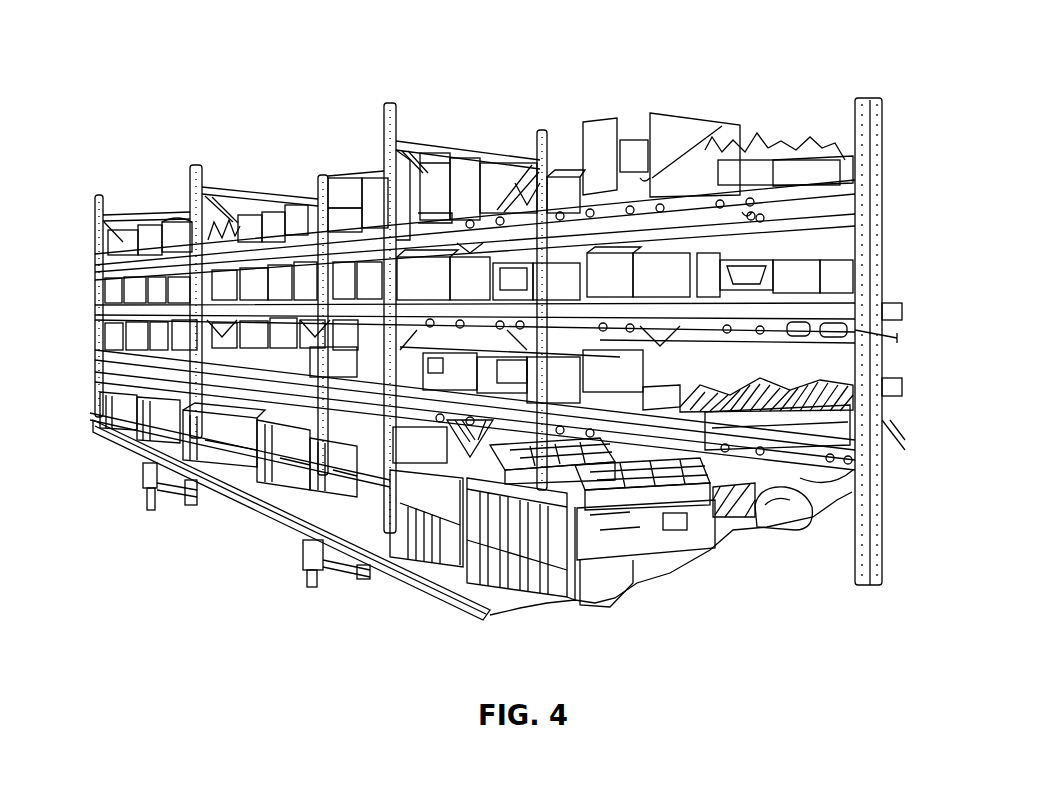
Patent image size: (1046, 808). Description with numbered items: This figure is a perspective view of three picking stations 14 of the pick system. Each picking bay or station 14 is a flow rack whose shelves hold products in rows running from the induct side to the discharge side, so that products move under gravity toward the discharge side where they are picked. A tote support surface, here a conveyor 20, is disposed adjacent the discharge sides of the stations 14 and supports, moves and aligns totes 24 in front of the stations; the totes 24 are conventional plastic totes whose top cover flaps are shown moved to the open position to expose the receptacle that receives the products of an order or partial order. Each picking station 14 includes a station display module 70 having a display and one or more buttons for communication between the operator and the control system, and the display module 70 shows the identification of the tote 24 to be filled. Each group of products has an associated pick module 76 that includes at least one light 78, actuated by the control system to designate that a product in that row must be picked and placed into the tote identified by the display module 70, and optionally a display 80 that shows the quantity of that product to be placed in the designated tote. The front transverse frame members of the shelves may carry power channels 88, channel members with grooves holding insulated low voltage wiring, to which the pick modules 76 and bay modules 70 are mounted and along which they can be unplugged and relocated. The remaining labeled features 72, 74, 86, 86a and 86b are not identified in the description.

The picking bay or station 14 is at (668, 98).
The conveyor 20 is at (395, 580).
The tote 24 is at (534, 527).
The station display module 70 is at (578, 222).
The box 72 is at (565, 225).
The container 74 is at (537, 222).
The pick module 76 is at (746, 212).
The light 78 is at (759, 214).
The display 80 is at (750, 214).
The upright post 86 is at (885, 150).
The post flange 86a is at (403, 195).
The post flange 86b is at (427, 222).
The power channel 88 is at (477, 222).